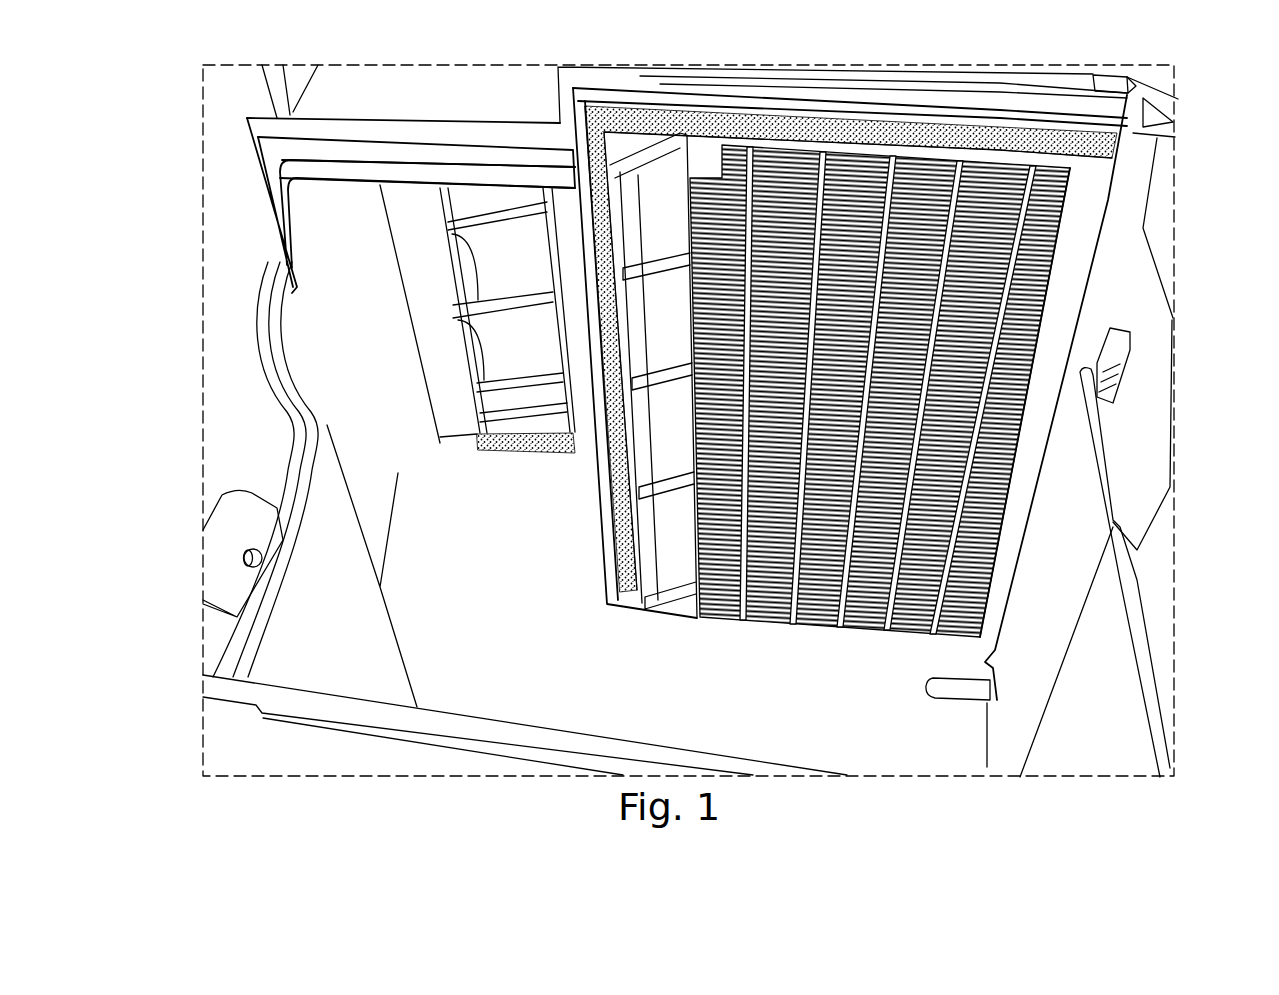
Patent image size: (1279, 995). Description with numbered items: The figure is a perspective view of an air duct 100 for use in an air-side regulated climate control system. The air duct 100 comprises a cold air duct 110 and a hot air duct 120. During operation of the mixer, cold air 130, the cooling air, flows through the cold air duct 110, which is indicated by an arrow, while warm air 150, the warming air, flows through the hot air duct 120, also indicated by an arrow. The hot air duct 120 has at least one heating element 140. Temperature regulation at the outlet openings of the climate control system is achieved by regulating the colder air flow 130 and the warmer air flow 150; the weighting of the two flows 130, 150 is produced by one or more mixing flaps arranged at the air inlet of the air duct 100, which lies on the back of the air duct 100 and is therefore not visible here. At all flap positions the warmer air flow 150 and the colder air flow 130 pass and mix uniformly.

The air duct 100 is at (332, 163).
The cold air duct 110 is at (430, 313).
The hot air duct 120 is at (1113, 340).
The cold air 130 is at (489, 337).
The heating element 140 is at (1000, 290).
The warm air 150 is at (880, 391).